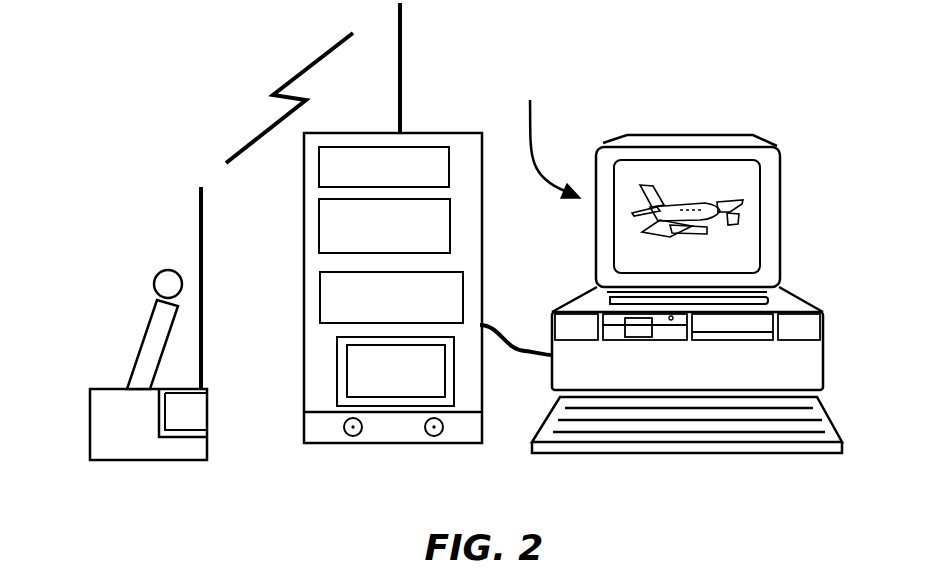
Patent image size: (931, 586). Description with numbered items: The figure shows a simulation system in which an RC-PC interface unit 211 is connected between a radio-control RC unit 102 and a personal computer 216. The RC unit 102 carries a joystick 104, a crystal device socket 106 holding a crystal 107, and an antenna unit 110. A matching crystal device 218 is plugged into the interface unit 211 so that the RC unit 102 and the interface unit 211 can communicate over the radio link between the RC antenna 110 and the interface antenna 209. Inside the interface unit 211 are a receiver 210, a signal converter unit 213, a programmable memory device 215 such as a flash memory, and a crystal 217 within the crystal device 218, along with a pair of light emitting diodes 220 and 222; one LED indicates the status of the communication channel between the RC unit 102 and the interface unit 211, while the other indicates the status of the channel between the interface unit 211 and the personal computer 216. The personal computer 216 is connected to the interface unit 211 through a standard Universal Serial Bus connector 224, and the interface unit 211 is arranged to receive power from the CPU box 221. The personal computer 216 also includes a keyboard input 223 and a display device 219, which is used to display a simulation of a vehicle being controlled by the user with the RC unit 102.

The RC unit 102 is at (90, 410).
The joystick 104 is at (143, 327).
The crystal device socket 106 is at (159, 405).
The crystal C45 107 is at (207, 423).
The antenna unit 110 is at (200, 220).
The interface antenna 209 is at (402, 47).
The receiver 210 is at (317, 170).
The interface unit 211 is at (430, 133).
The signal converter unit 213 is at (317, 213).
The programmable memory device 215 is at (330, 292).
The personal computer 216 is at (547, 139).
The crystal #45 217 is at (347, 360).
The matching crystal device 218 is at (454, 358).
The display device 219 is at (780, 190).
The light emitting diode 220 is at (353, 437).
The CPU box 221 is at (823, 337).
The light emitting diode 222 is at (433, 437).
The keyboard input 223 is at (835, 418).
The Universal Serial Bus connector 224 is at (498, 317).